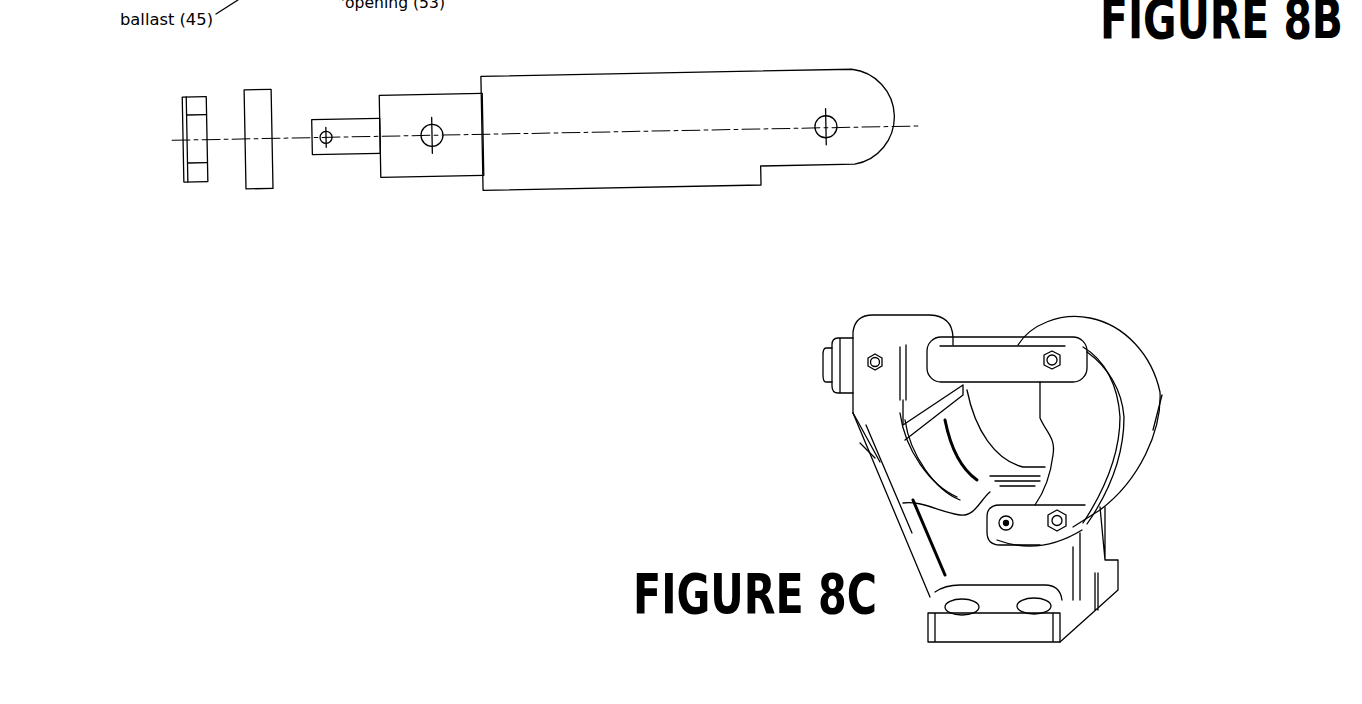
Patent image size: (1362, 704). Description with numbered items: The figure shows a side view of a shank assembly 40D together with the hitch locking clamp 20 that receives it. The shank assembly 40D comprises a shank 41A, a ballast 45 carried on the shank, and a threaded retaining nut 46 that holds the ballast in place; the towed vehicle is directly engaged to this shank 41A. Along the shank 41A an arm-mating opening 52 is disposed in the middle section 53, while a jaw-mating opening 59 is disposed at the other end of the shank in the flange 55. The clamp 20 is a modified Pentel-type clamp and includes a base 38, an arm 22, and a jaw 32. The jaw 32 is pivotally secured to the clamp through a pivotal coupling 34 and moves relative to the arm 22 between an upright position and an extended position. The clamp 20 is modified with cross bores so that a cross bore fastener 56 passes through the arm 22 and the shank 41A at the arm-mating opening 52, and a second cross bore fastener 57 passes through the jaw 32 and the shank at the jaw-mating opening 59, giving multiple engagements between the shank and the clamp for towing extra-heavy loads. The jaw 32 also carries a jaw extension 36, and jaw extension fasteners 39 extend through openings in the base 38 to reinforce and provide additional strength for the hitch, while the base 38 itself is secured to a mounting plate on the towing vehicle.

In FIG. 8B, the shank assembly 40D is at (467, 242).
In FIG. 8B, the threaded retaining nut 46 is at (192, 172).
In FIG. 8B, the ballast 45 is at (259, 176).
In FIG. 8B, the shank 41A is at (617, 163).
In FIG. 8C, the shank 41A is at (1020, 355).
In FIG. 8B, the middle section 53 is at (326, 147).
In FIG. 8B, the arm-mating opening 52 is at (436, 150).
In FIG. 8B, the jaw-mating opening 59 is at (828, 112).
In FIG. 8B, the flange 55 is at (879, 107).
In FIG. 8C, the clamp 20 is at (849, 497).
In FIG. 8C, the arm 22 is at (857, 393).
In FIG. 8C, the cross bore fastener 56 is at (878, 350).
In FIG. 8C, the cross bore fastener 57 is at (1052, 352).
In FIG. 8C, the jaw 32 is at (1158, 398).
In FIG. 8C, the base 38 is at (933, 530).
In FIG. 8C, the jaw extension 36 is at (1027, 530).
In FIG. 8C, the pivotal coupling 34 is at (1065, 512).
In FIG. 8C, the jaw extension fastener 39 is at (1008, 531).